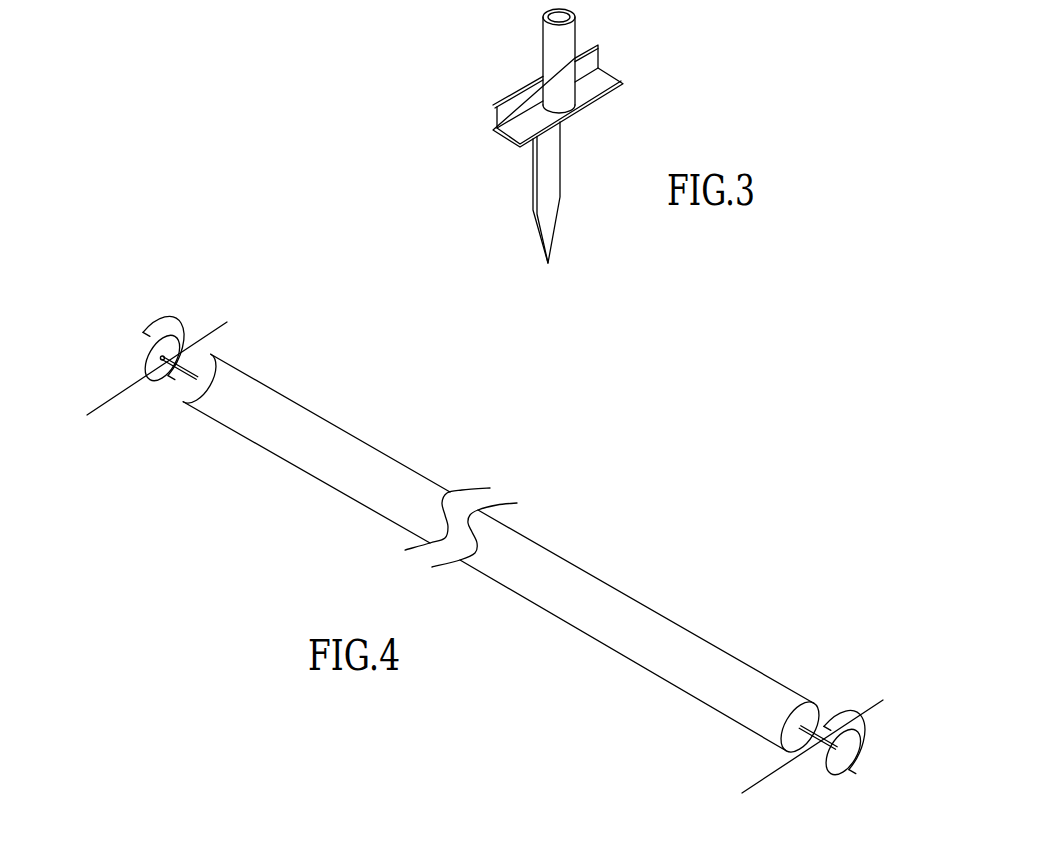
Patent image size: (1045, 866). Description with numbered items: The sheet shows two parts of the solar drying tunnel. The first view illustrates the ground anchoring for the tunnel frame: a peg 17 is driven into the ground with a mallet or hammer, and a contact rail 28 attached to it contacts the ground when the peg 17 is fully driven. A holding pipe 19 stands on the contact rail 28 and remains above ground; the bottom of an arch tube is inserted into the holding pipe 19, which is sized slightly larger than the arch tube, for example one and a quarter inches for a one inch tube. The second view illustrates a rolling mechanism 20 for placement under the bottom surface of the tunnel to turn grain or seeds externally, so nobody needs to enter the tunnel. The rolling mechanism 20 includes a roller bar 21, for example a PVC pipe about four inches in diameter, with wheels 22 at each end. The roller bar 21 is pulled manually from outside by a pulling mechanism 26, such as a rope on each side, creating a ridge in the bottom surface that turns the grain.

In FIG. 3, the peg 17 is at (533, 187).
In FIG. 3, the holding pipe 19 is at (540, 47).
In FIG. 4, the rolling mechanism 20 is at (650, 453).
In FIG. 4, the roller bar 21 is at (353, 436).
In FIG. 4, the wheel 22 is at (162, 332).
In FIG. 4, the pulling mechanism 26 is at (205, 338).
In FIG. 3, the contact rail 28 is at (612, 75).